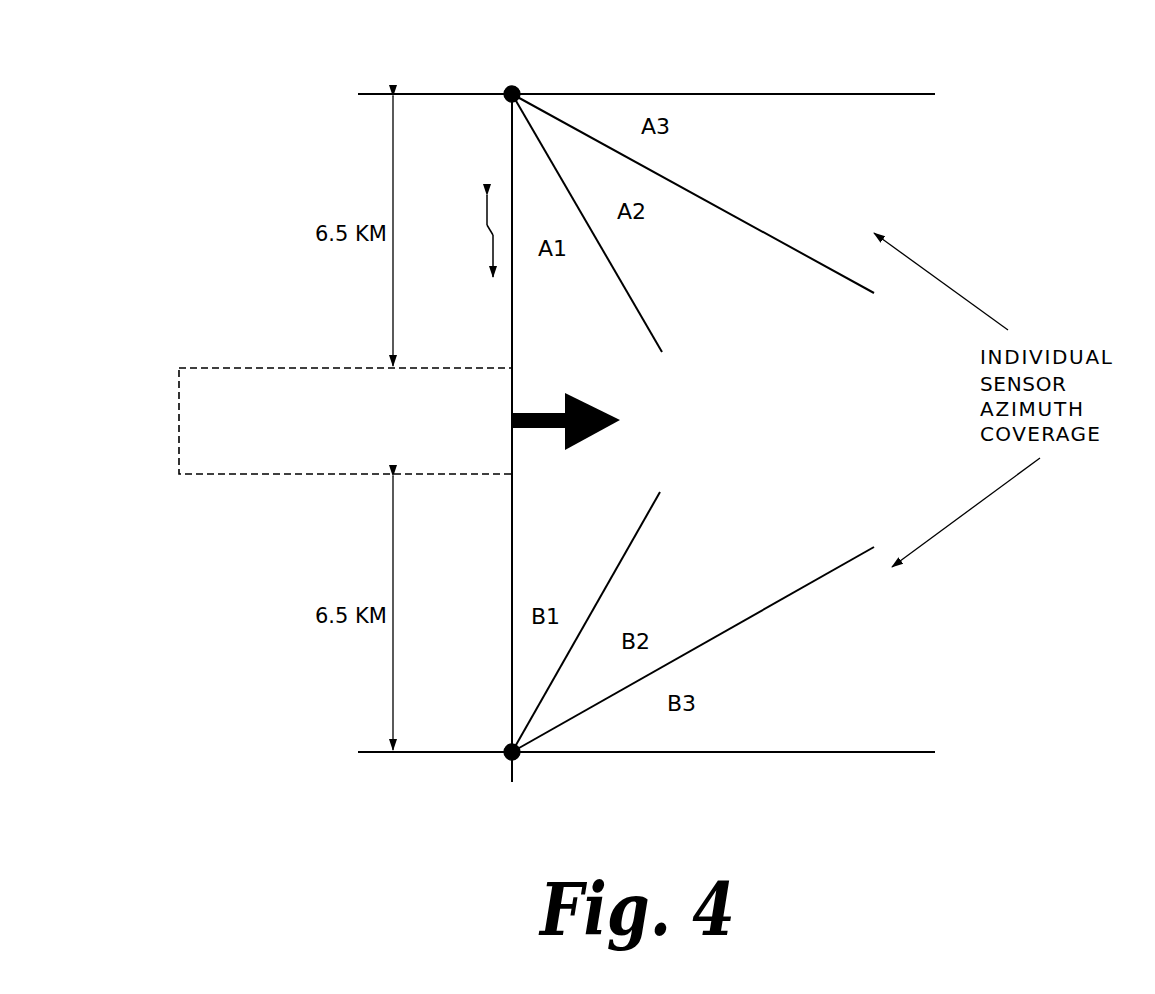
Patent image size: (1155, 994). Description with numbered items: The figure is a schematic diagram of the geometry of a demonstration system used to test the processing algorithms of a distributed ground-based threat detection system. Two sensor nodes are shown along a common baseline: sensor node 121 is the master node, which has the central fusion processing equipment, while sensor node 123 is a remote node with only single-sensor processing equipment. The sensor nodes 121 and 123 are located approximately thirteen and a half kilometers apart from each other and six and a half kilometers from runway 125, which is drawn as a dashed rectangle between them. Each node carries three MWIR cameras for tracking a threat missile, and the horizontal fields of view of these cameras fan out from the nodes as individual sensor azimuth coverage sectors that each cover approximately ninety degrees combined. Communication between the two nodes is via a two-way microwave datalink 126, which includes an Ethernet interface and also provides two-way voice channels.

The sensor node 121 is at (512, 94).
The sensor node 123 is at (518, 758).
The runway 125 is at (295, 368).
The two-way microwave datalink 126 is at (488, 232).